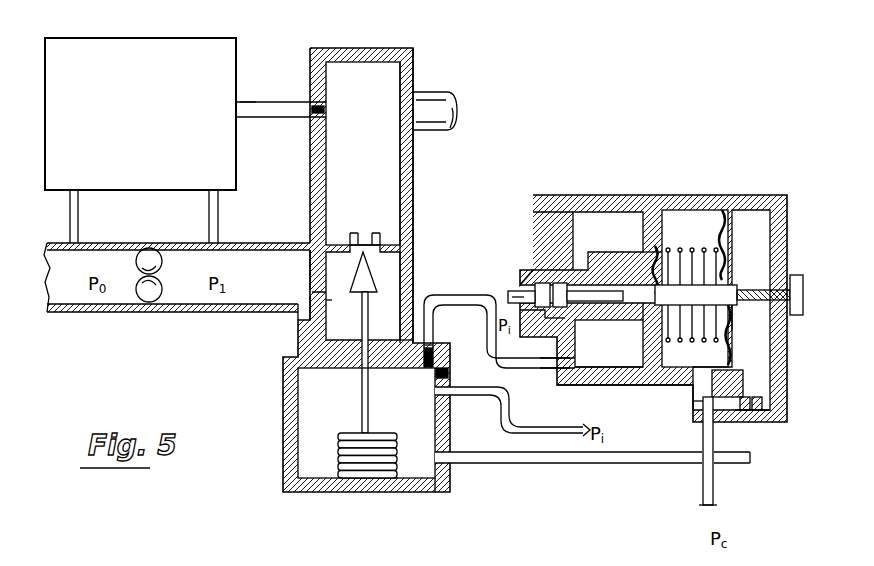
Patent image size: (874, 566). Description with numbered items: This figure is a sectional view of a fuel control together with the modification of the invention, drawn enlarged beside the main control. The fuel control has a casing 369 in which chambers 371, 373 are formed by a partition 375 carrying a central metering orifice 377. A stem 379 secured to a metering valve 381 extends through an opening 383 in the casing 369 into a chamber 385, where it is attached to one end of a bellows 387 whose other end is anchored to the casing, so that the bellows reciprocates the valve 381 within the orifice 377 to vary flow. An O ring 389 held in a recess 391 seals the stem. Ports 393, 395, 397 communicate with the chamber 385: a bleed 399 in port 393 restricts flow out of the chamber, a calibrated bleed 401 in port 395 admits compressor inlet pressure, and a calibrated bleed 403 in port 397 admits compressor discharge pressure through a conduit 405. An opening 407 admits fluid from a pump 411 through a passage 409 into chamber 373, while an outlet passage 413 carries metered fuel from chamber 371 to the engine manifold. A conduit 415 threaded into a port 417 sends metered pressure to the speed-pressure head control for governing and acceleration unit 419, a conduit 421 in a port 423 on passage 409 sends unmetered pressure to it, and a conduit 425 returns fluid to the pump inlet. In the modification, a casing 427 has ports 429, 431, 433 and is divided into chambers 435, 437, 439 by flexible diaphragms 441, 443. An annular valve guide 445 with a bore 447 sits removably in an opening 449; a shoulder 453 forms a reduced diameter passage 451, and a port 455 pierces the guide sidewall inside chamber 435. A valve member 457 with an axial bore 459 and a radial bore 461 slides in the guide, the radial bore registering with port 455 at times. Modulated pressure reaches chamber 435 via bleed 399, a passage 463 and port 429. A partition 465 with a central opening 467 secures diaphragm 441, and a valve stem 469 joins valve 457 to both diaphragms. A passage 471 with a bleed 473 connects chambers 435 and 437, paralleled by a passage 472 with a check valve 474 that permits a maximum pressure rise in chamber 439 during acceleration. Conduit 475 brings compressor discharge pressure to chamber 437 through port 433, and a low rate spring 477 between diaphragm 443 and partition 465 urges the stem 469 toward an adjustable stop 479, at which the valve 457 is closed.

The casing 369 is at (286, 488).
The chamber 371 is at (372, 190).
The chamber 373 is at (395, 284).
The partition 375 is at (383, 247).
The metering orifice 377 is at (355, 243).
The stem 379 is at (369, 387).
The metering valve 381 is at (355, 265).
The opening 383 is at (366, 340).
The chamber 385 is at (340, 417).
The bellows 387 is at (380, 480).
The O ring 389 is at (411, 340).
The recess 391 is at (352, 340).
The port 393 is at (434, 350).
The port 395 is at (453, 365).
The port 397 is at (450, 478).
The bleed 399 is at (433, 348).
The calibrated bleed 401 is at (452, 396).
The calibrated bleed 403 is at (453, 457).
The conduit 405 is at (562, 460).
The opening 407 is at (322, 258).
The passage 409 is at (213, 308).
The pump 411 is at (138, 296).
The outlet passage 413 is at (424, 93).
The conduit 415 is at (250, 84).
The port 417 is at (312, 128).
The speed-pressure head control for governing and acceleration unit 419 is at (117, 48).
The conduit 421 is at (218, 204).
The port 423 is at (220, 242).
The conduit 425 is at (78, 222).
The casing 427 is at (675, 193).
The port 429 is at (556, 372).
The port 431 is at (520, 287).
The port 433 is at (718, 435).
The chamber 435 is at (611, 235).
The chamber 437 is at (700, 234).
The chamber 439 is at (763, 234).
The flexible diaphragm 441 is at (645, 346).
The flexible diaphragm 443 is at (728, 278).
The annular valve guide 445 is at (543, 263).
The bore 447 is at (537, 217).
The opening 449 is at (540, 318).
The reduced diameter passage 451 is at (533, 316).
The shoulder 453 is at (609, 343).
The port 455 is at (606, 315).
The valve member 457 is at (585, 268).
The axial bore 459 is at (590, 297).
The radial bore 461 is at (643, 270).
The passage 463 is at (459, 297).
The partition 465 is at (662, 348).
The central opening 467 is at (640, 262).
The valve stem 469 is at (728, 338).
The passage 471 is at (706, 410).
The passage 472 is at (762, 415).
The bleed 473 is at (712, 401).
The check valve 474 is at (766, 415).
The conduit 475 is at (702, 487).
The low rate spring 477 is at (722, 210).
The adjustable stop 479 is at (750, 318).